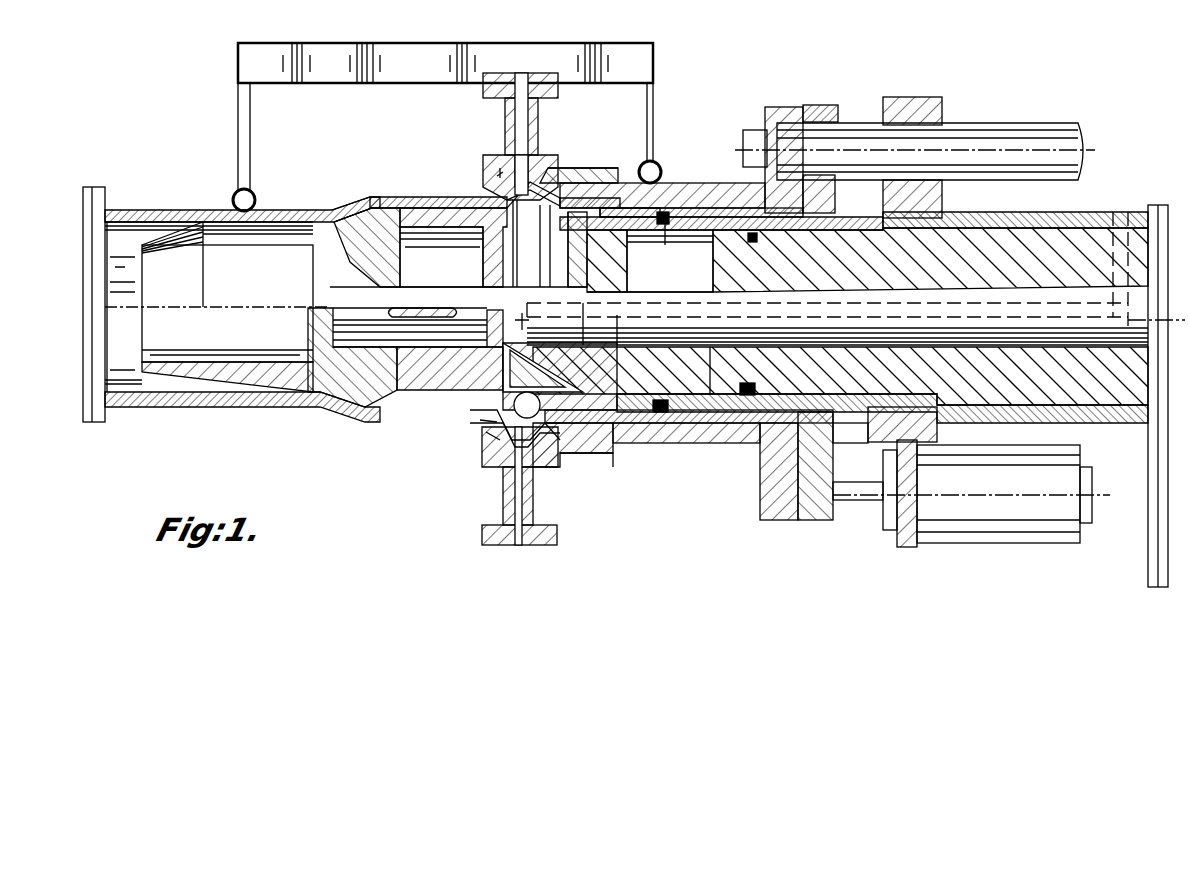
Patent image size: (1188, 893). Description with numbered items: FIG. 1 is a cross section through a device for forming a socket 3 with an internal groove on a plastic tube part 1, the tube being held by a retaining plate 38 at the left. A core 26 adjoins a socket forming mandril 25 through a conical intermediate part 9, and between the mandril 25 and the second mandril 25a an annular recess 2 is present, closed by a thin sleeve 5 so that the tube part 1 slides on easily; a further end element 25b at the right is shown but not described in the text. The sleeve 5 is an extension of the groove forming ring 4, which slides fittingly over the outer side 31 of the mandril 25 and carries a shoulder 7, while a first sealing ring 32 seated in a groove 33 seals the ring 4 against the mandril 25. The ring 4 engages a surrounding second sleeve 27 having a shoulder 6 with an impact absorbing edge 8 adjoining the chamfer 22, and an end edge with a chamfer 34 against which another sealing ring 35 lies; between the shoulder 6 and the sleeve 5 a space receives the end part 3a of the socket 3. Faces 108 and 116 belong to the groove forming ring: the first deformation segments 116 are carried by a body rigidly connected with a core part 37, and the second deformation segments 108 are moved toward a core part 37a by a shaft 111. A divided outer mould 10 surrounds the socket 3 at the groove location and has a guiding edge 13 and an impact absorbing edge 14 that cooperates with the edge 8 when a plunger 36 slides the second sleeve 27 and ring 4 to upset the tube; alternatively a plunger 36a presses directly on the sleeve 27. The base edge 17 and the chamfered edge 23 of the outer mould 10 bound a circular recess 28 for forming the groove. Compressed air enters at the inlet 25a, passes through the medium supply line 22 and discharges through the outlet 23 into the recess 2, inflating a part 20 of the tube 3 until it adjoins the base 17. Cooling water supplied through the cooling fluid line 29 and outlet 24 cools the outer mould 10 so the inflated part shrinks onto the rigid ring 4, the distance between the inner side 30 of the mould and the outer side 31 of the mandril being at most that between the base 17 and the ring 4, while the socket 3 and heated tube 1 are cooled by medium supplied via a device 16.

The plastic tube part 1 is at (150, 398).
The annular recess 2 is at (545, 230).
The socket 3 is at (455, 200).
The end part of the socket 3a is at (568, 478).
The groove forming ring 4 is at (725, 190).
The thin sleeve 5 is at (585, 230).
The shoulder of the second sleeve 6 is at (592, 445).
The shoulder of the ring 7 is at (820, 107).
The impact absorbing edge 8 is at (548, 168).
The conical intermediate part 9 is at (332, 218).
The divided outer mould 10 is at (503, 120).
The guiding edge 13 is at (590, 155).
The impact absorbing edge of the outer mould 14 is at (503, 470).
The cooling device 16 is at (410, 45).
The base edge 17 is at (498, 176).
The inflated tube part 20 is at (525, 215).
The medium supply line 22 is at (575, 195).
The outlet 23 is at (500, 172).
The cooling fluid outlet 24 is at (526, 73).
The socket forming mandril 25 is at (410, 218).
The socket forming mandril / inlet 25a is at (695, 225).
The end plate 25b is at (1125, 215).
The core 26 is at (230, 245).
The second sleeve 27 is at (675, 445).
The circular recess 28 is at (858, 210).
The cooling fluid line 29 is at (516, 548).
The inner side of the outer mould 30 is at (485, 440).
The outer side of the socket forming mandril 31 is at (383, 210).
The first sealing ring 32 is at (662, 205).
The groove 33 is at (666, 228).
The chamfer 34 is at (765, 480).
The sealing ring 35 is at (833, 445).
The plunger 36 is at (860, 500).
The plunger 36a is at (960, 130).
The core part 37 is at (425, 375).
The core part 37a is at (640, 425).
The retaining plate 38 is at (93, 200).
The second deformation segments 108 is at (480, 428).
The shaft 111 is at (1100, 370).
The first deformation segments 116 is at (580, 480).